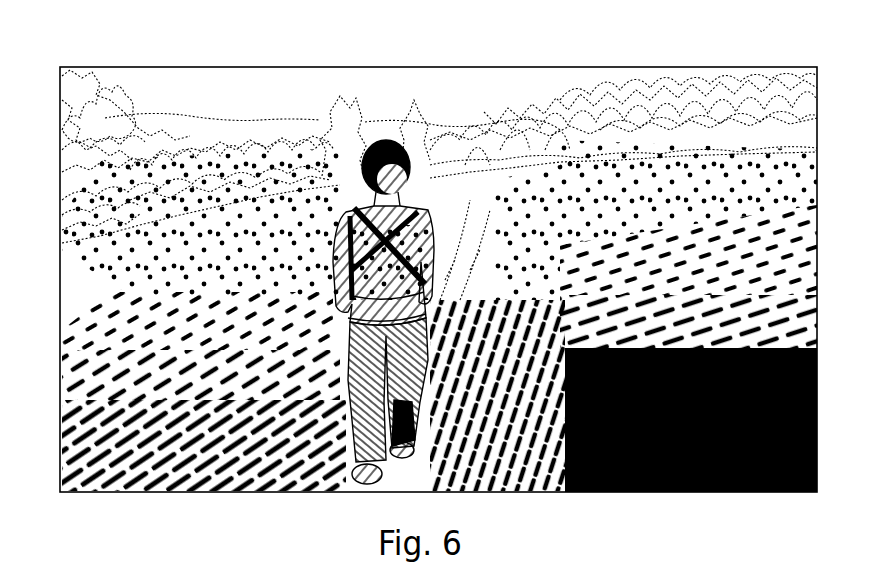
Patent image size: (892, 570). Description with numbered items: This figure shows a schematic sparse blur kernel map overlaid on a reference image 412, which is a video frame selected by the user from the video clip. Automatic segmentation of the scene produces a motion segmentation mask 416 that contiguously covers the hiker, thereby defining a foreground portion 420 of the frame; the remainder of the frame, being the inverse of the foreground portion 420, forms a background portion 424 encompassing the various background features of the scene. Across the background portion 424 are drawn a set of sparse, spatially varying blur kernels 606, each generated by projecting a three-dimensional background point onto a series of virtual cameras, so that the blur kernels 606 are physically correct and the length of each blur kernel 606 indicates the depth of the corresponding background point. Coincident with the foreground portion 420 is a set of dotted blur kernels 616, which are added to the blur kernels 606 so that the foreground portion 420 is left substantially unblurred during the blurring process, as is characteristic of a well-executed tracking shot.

The reference image 412 is at (200, 86).
The motion segmentation mask 416 is at (677, 437).
The foreground portion 420 is at (525, 256).
The background portion 424 is at (113, 303).
The blur kernels 606 is at (110, 405).
The dotted blur kernels 616 is at (396, 222).